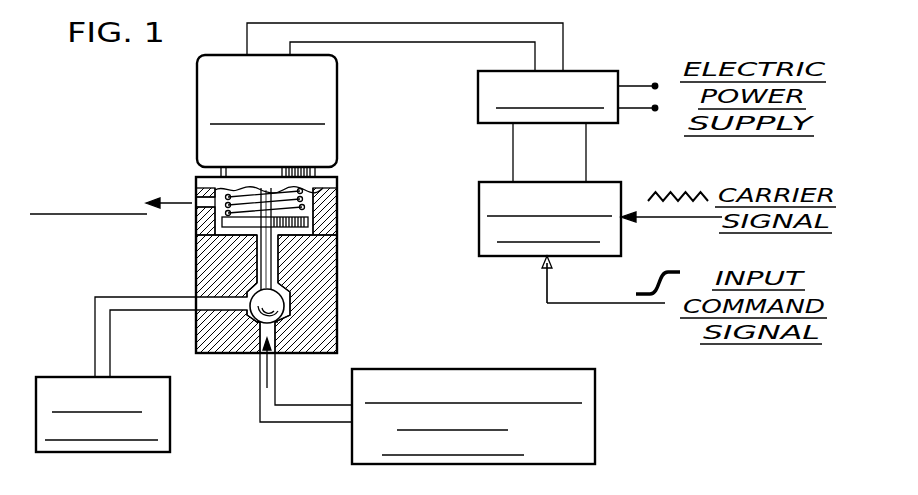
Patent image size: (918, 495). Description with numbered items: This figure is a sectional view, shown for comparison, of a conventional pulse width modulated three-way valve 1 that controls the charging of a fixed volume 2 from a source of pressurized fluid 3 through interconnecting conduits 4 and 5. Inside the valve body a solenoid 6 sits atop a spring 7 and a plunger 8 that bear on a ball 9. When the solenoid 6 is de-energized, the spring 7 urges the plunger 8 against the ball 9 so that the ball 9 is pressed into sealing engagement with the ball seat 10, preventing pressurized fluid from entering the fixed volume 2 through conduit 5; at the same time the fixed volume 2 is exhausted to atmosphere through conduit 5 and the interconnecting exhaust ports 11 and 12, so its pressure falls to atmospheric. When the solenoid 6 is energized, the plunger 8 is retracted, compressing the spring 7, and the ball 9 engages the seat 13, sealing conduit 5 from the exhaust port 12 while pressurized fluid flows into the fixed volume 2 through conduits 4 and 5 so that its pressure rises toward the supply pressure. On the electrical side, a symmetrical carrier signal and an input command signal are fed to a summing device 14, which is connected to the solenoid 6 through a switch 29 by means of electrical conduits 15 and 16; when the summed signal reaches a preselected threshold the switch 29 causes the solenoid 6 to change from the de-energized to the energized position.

The three-way valve 1 is at (340, 230).
The fixed volume 2 is at (57, 383).
The source of pressurized fluid 3 is at (490, 371).
The conduit 4 is at (263, 405).
The conduit 5 is at (143, 275).
The solenoid 6 is at (210, 88).
The spring 7 is at (293, 206).
The plunger 8 is at (278, 272).
The ball 9 is at (270, 305).
The ball seat 10 is at (273, 332).
The exhaust port 11 is at (280, 258).
The exhaust port 12 is at (210, 217).
The seat 13 is at (288, 293).
The summing device 14 is at (597, 187).
The electrical conduit 15 is at (566, 27).
The electrical conduit 16 is at (486, 44).
The switch 29 is at (600, 77).